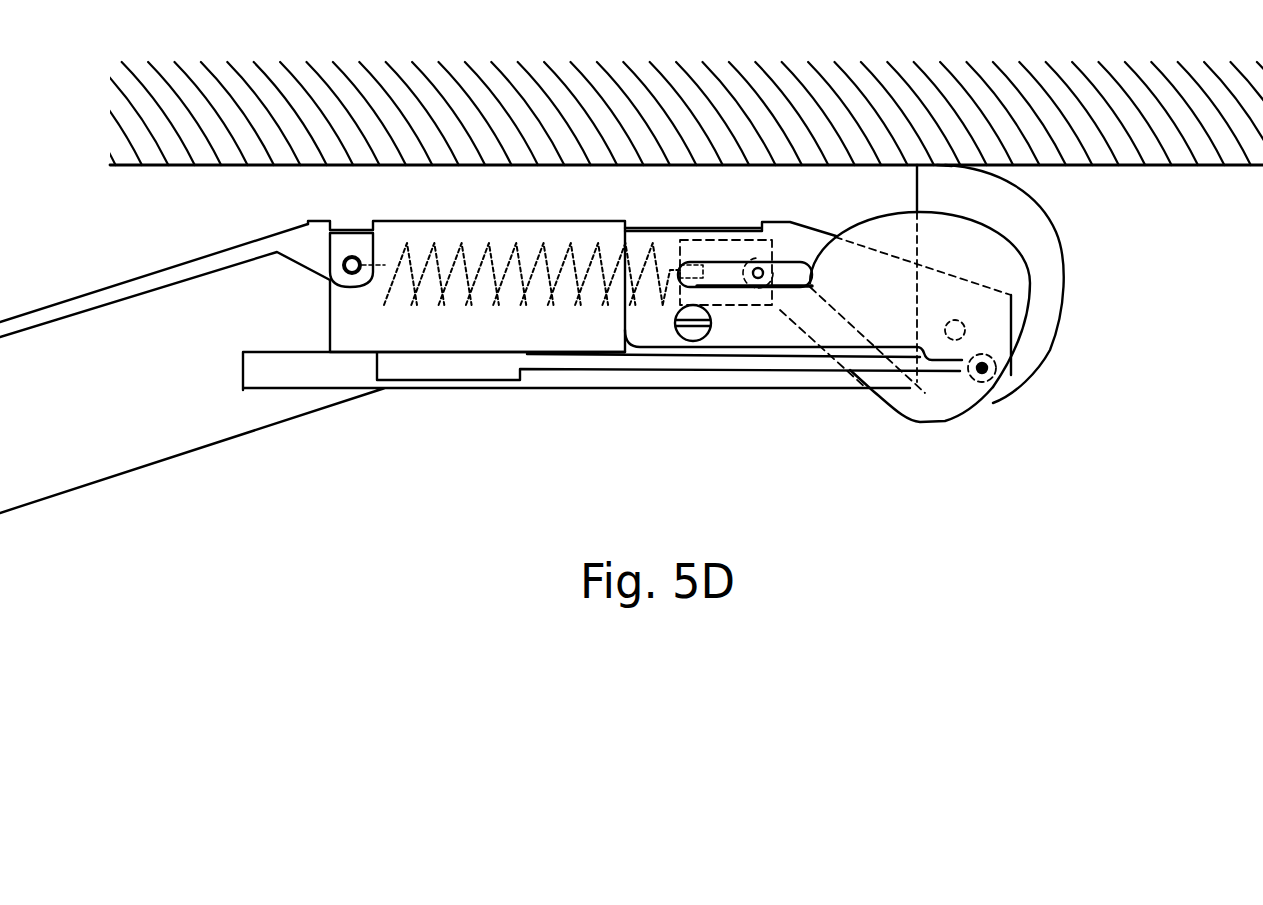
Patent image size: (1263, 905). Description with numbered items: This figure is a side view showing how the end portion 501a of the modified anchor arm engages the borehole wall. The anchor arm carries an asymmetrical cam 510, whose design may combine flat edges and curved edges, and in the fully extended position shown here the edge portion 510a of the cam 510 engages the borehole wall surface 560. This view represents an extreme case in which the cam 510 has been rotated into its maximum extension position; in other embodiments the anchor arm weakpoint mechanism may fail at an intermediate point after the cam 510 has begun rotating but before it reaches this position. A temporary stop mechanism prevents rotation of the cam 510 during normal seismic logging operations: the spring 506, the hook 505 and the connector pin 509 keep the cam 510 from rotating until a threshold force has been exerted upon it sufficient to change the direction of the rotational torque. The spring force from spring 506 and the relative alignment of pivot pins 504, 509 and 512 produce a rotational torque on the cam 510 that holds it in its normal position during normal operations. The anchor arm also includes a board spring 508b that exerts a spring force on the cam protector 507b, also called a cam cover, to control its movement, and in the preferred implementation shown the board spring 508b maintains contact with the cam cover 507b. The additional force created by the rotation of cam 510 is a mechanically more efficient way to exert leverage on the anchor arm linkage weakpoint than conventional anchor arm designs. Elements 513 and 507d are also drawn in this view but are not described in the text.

The borehole wall surface 560 is at (540, 167).
The end portion of the modified anchor arm 501a is at (886, 548).
The board spring 508b is at (517, 370).
The spring 506 is at (497, 305).
The sensor region 513 is at (711, 300).
The pivot pin 512 is at (760, 287).
The screw 507d is at (692, 335).
The cam protector 507b is at (987, 243).
The cam 510 is at (1062, 262).
The edge portion of the cam 510a is at (937, 165).
The pivot pin 504 is at (965, 333).
The connector pin 509 is at (990, 368).
The hook 505 is at (955, 423).